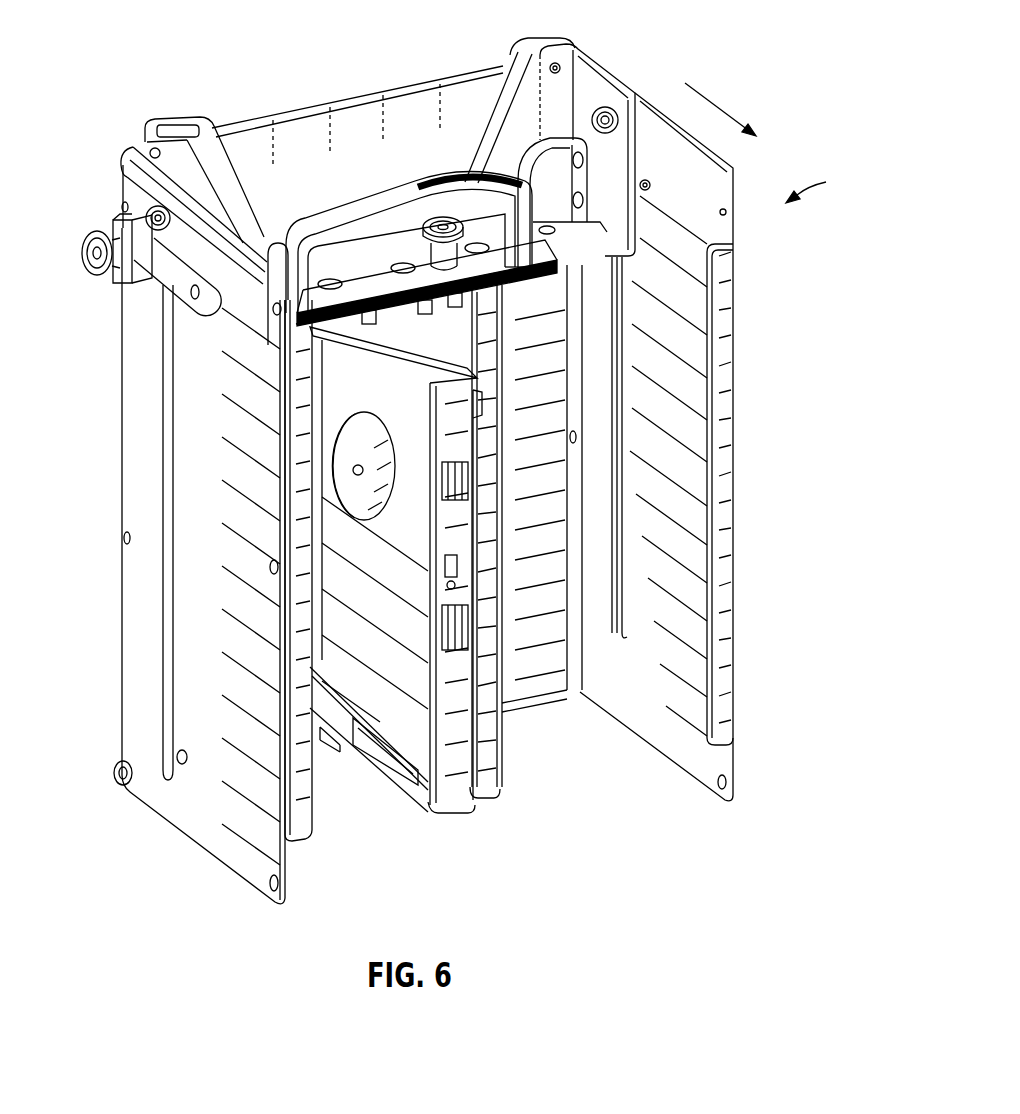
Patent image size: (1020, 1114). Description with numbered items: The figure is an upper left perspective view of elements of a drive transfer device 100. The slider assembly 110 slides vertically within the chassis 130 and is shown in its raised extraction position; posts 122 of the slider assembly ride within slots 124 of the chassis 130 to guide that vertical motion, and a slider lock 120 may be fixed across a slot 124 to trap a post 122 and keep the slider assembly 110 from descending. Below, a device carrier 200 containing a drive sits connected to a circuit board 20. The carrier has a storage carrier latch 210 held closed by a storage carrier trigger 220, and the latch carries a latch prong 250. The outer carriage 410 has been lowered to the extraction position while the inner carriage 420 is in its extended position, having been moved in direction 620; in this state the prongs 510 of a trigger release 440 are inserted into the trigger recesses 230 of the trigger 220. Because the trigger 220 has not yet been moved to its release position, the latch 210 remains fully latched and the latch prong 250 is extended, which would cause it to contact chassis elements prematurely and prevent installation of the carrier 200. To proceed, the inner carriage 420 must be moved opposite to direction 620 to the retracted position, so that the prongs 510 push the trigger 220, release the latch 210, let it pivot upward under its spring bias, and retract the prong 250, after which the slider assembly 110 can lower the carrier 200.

The drive transfer device 100 is at (828, 183).
The slider assembly 110 is at (361, 112).
The slider lock 120 is at (120, 234).
The post 122 is at (128, 196).
The slot 124 is at (168, 398).
The chassis 130 is at (462, 92).
The circuit board 20 is at (486, 787).
The device carrier 200 is at (440, 795).
The storage carrier latch 210 is at (421, 352).
The storage carrier trigger 220 is at (428, 319).
The trigger recess 230 is at (348, 316).
The latch prong 250 is at (433, 413).
The outer carriage 410 is at (590, 68).
The inner carriage 420 is at (603, 232).
The trigger release 440 is at (371, 307).
The prong 510 is at (362, 304).
The direction 620 is at (724, 103).